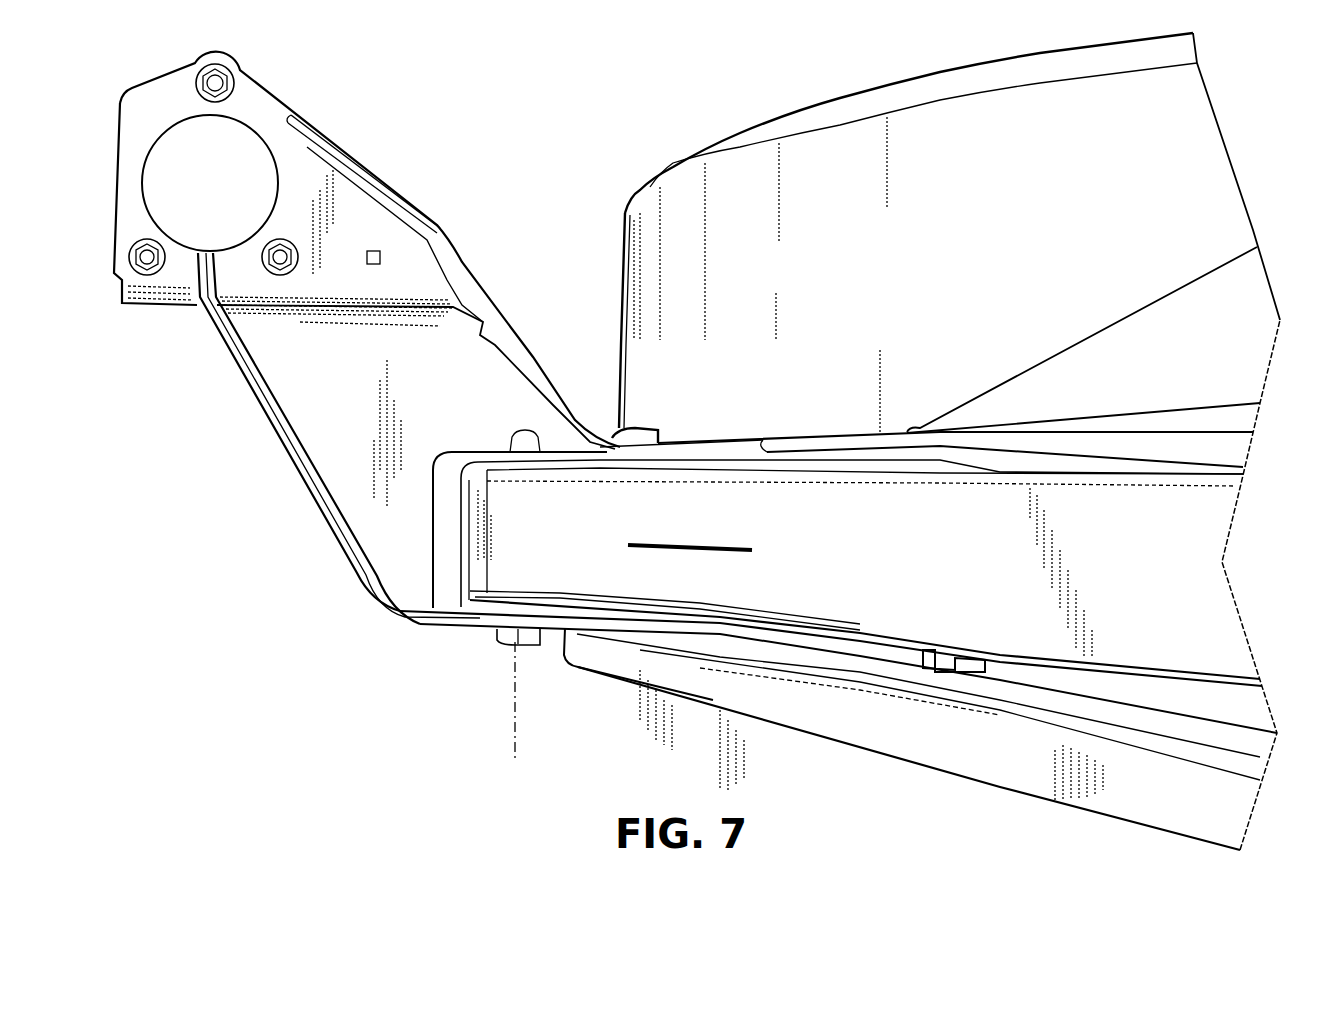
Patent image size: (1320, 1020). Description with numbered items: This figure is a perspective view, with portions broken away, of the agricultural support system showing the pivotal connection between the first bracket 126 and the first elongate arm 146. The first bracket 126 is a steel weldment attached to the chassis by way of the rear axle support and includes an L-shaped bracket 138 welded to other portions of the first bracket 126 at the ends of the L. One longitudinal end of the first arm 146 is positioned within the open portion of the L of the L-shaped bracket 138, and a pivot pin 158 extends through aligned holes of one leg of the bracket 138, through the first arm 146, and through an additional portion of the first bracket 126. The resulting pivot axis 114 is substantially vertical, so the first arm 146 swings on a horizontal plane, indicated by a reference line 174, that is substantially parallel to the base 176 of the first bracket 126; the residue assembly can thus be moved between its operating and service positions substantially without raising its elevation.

The first bracket 126 is at (357, 563).
The L-shaped bracket 138 is at (443, 552).
The pivot pin 158 is at (503, 636).
The pivot axis 114 is at (512, 686).
The reference line 174 is at (653, 548).
The base 176 is at (660, 625).
The first elongate arm 146 is at (1020, 627).